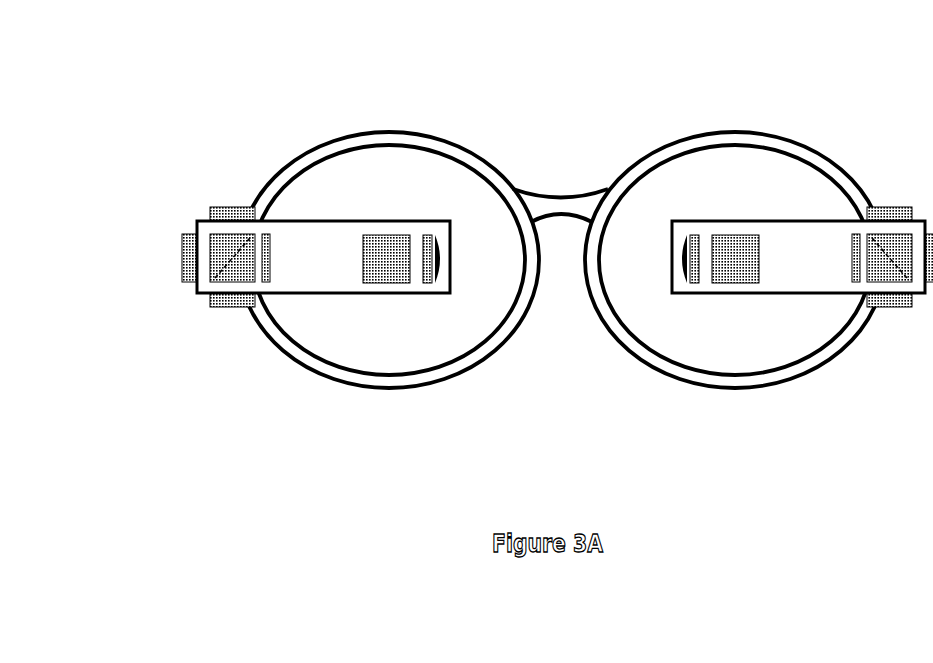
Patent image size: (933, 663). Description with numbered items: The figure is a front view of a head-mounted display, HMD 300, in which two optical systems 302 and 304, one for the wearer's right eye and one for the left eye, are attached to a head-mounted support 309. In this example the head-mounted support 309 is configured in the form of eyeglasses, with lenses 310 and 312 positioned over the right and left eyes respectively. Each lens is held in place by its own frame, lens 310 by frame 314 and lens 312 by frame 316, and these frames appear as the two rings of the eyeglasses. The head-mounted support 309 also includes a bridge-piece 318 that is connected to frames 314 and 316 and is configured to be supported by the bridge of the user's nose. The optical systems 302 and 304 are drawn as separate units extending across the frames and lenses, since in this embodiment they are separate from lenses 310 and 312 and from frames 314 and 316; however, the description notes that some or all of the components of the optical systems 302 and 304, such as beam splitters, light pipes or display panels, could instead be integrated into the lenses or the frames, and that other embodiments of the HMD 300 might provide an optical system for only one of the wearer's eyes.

The HMD 300 is at (557, 270).
The optical system 302 is at (298, 221).
The optical system 304 is at (820, 221).
The head-mounted support 309 is at (597, 140).
The lens 310 is at (413, 373).
The lens 312 is at (740, 373).
The frame 314 is at (285, 355).
The frame 316 is at (847, 349).
The bridge-piece 318 is at (588, 189).